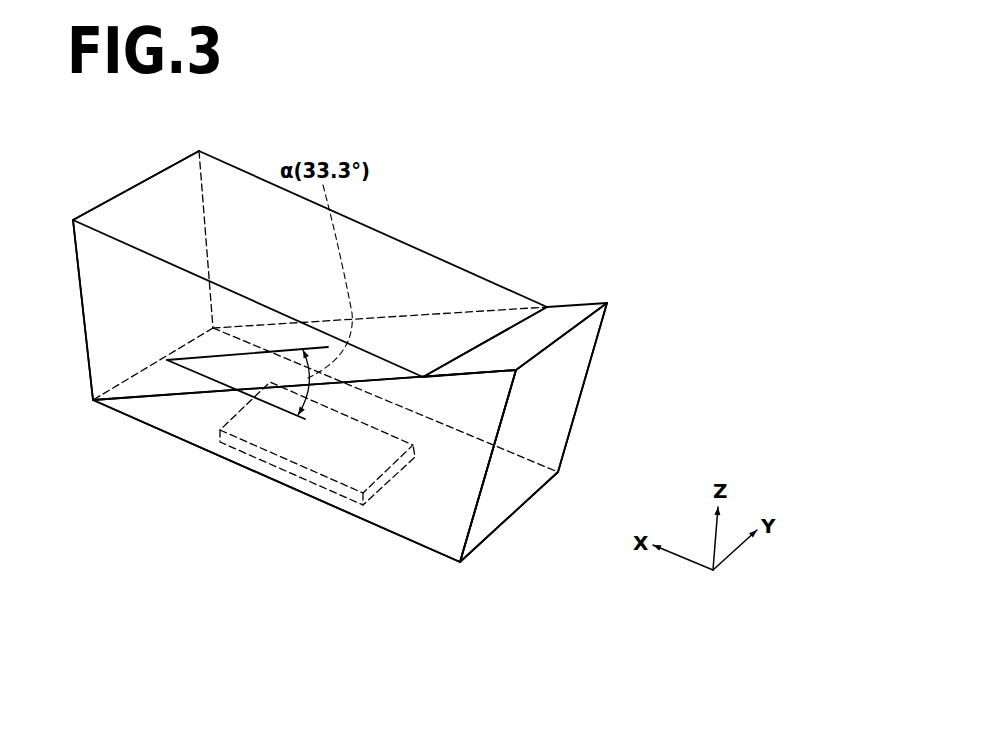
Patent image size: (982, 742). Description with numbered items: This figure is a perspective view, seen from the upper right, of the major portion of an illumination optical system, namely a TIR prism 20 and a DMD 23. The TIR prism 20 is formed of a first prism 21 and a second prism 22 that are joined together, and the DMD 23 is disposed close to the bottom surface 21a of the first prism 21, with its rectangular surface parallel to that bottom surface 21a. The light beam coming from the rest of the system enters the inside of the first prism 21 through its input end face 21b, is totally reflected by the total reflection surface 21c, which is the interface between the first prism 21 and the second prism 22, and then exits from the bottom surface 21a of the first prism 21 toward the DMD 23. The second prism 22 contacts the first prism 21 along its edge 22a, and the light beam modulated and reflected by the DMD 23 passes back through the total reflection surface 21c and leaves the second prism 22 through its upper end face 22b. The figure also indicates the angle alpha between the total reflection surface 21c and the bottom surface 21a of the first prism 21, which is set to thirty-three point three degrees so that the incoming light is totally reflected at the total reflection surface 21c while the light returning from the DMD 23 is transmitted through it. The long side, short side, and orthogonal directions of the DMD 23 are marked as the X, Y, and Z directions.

The TIR prism 20 is at (500, 163).
The first prism 21 is at (584, 300).
The bottom surface 21a is at (510, 522).
The input end face 21b is at (577, 361).
The total reflection surface 21c is at (160, 382).
The second prism 22 is at (226, 160).
The edge of the second prism 22a is at (490, 337).
The upper end face 22b is at (122, 203).
The DMD 23 is at (283, 467).